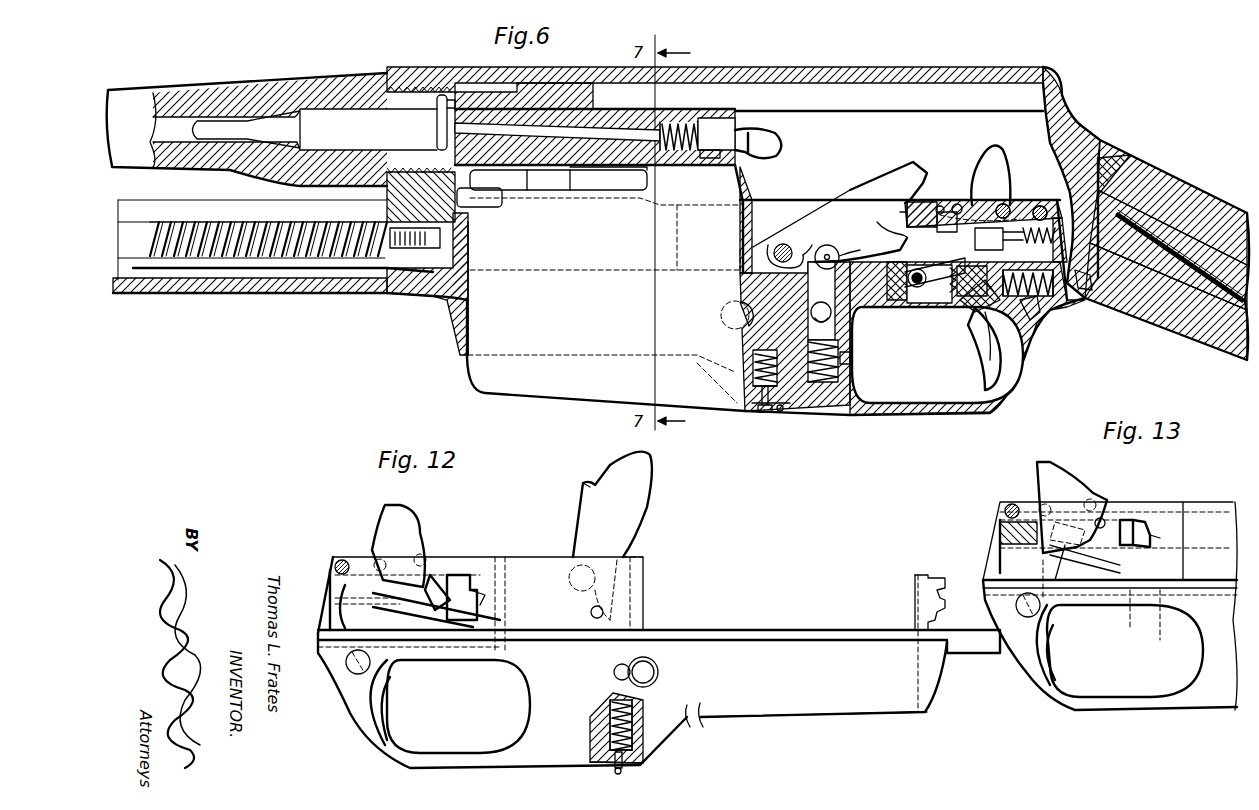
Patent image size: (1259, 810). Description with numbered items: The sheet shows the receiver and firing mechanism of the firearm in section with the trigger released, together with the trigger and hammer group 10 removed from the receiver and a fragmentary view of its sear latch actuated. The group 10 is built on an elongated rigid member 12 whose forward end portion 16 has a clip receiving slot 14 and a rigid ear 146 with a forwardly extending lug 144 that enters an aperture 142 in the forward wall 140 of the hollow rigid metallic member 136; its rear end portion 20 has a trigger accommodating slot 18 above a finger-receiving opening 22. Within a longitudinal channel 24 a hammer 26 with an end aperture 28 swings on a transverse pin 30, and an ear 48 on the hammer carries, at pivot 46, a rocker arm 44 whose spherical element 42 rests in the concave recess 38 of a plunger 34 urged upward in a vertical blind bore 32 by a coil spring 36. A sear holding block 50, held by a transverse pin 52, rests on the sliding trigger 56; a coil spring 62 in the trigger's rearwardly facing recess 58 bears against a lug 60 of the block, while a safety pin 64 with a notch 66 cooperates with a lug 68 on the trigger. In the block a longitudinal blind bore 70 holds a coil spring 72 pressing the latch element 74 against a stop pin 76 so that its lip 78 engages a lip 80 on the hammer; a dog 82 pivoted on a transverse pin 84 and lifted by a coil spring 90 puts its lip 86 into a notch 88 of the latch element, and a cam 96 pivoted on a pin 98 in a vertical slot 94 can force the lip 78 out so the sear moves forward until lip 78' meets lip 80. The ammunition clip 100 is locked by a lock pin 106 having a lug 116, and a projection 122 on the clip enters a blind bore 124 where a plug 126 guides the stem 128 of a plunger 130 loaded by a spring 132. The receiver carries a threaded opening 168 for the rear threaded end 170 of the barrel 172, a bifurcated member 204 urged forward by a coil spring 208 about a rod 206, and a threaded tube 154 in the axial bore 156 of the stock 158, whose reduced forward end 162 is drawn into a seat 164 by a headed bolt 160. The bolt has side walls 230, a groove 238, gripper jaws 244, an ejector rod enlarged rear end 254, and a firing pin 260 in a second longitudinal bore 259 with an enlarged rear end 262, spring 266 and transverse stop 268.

In FIG. 12, the trigger and hammer group 10 is at (684, 621).
In FIG. 12, the elongated rigid member 12 is at (702, 720).
In FIG. 13, the elongated rigid member 12 is at (1223, 705).
In FIG. 6, the clip receiving slot 14 is at (466, 320).
In FIG. 6, the forward end portion 16 is at (425, 295).
In FIG. 12, the forward end portion 16 is at (927, 708).
In FIG. 6, the trigger accommodating slot 18 is at (877, 298).
In FIG. 6, the rear end portion 20 is at (1040, 338).
In FIG. 12, the rear end portion 20 is at (353, 705).
In FIG. 13, the rear end portion 20 is at (1038, 693).
In FIG. 6, the finger-receiving opening 22 is at (893, 400).
In FIG. 12, the finger-receiving opening 22 is at (445, 753).
In FIG. 6, the longitudinal channel 24 is at (753, 218).
In FIG. 12, the longitudinal channel 24 is at (527, 570).
In FIG. 13, the longitudinal channel 24 is at (1197, 508).
In FIG. 6, the hammer 26 is at (878, 183).
In FIG. 12, the hammer 26 is at (635, 527).
In FIG. 6, the end aperture 28 is at (784, 245).
In FIG. 6, the transverse pin 30 is at (776, 247).
In FIG. 12, the transverse pin 30 is at (597, 620).
In FIG. 6, the vertical blind bore 32 is at (805, 292).
In FIG. 6, the plunger 34 is at (809, 360).
In FIG. 6, the coil spring 36 is at (845, 358).
In FIG. 6, the concave recess 38 is at (810, 311).
In FIG. 6, the spherical element 42 is at (806, 325).
In FIG. 6, the rocker arm 44 is at (805, 243).
In FIG. 6, the pivot 46 is at (828, 254).
In FIG. 6, the ear 48 is at (853, 242).
In FIG. 6, the sear holding block 50 is at (915, 203).
In FIG. 12, the sear holding block 50 is at (447, 567).
In FIG. 6, the transverse pin 52 is at (1040, 206).
In FIG. 12, the transverse pin 52 is at (347, 562).
In FIG. 13, the transverse pin 52 is at (1006, 510).
In FIG. 6, the trigger 56 is at (924, 300).
In FIG. 6, the rearwardly facing recess 58 is at (980, 312).
In FIG. 6, the lug 60 is at (1086, 284).
In FIG. 6, the coil spring 62 is at (1048, 302).
In FIG. 6, the safety pin 64 is at (1037, 314).
In FIG. 12, the safety pin 64 is at (352, 668).
In FIG. 13, the safety pin 64 is at (1020, 612).
In FIG. 6, the notch 66 is at (997, 352).
In FIG. 6, the lug 68 is at (995, 332).
In FIG. 6, the longitudinal blind bore 70 is at (1006, 204).
In FIG. 6, the coil spring 72 is at (1067, 218).
In FIG. 6, the latch element 74 is at (907, 212).
In FIG. 12, the latch element 74 is at (470, 578).
In FIG. 13, the latch element 74 is at (1140, 538).
In FIG. 6, the stop pin 76 is at (980, 207).
In FIG. 6, the lip 78 is at (903, 224).
In FIG. 12, the lip 78' is at (489, 586).
In FIG. 13, the lip 78' is at (1181, 529).
In FIG. 6, the lip 80 is at (861, 254).
In FIG. 12, the lip 80 is at (596, 484).
In FIG. 6, the dog 82 is at (968, 281).
In FIG. 12, the dog 82 is at (385, 602).
In FIG. 13, the dog 82 is at (1078, 565).
In FIG. 6, the transverse pin 84 is at (910, 292).
In FIG. 13, the lip 86 is at (1050, 558).
In FIG. 6, the notch 88 is at (1021, 241).
In FIG. 13, the notch 88 is at (1067, 524).
In FIG. 6, the coil spring 90 is at (930, 300).
In FIG. 6, the vertical slot 94 is at (939, 205).
In FIG. 6, the cam 96 is at (993, 157).
In FIG. 12, the cam 96 is at (410, 527).
In FIG. 13, the cam 96 is at (1060, 467).
In FIG. 6, the pin 98 is at (960, 205).
In FIG. 12, the pin 98 is at (437, 546).
In FIG. 13, the pin 98 is at (1098, 518).
In FIG. 6, the ammunition clip 100 is at (573, 386).
In FIG. 6, the lock pin 106 is at (740, 303).
In FIG. 12, the lock pin 106 is at (658, 670).
In FIG. 12, the lug 116 is at (614, 671).
In FIG. 6, the projection 122 is at (770, 414).
In FIG. 6, the blind bore 124 is at (753, 357).
In FIG. 12, the blind bore 124 is at (596, 733).
In FIG. 6, the plug 126 is at (746, 408).
In FIG. 12, the plug 126 is at (643, 760).
In FIG. 6, the stem 128 is at (762, 414).
In FIG. 12, the stem 128 is at (615, 772).
In FIG. 6, the plunger 130 is at (752, 386).
In FIG. 12, the plunger 130 is at (595, 750).
In FIG. 6, the spring 132 is at (753, 366).
In FIG. 12, the spring 132 is at (602, 715).
In FIG. 6, the hollow rigid metallic member 136 is at (912, 67).
In FIG. 6, the forward wall 140 is at (388, 189).
In FIG. 6, the aperture 142 is at (421, 197).
In FIG. 6, the lug 144 is at (465, 234).
In FIG. 12, the lug 144 is at (947, 592).
In FIG. 6, the ear 146 is at (463, 268).
In FIG. 12, the ear 146 is at (918, 603).
In FIG. 6, the internally threaded tube 154 is at (1142, 229).
In FIG. 6, the axial bore 156 is at (1222, 216).
In FIG. 6, the stock 158 is at (1202, 338).
In FIG. 6, the headed bolt 160 is at (1205, 291).
In FIG. 6, the reduced forward end 162 is at (1122, 170).
In FIG. 6, the seat 164 is at (1105, 168).
In FIG. 6, the threaded opening 168 is at (401, 86).
In FIG. 6, the rear threaded end 170 is at (434, 87).
In FIG. 6, the barrel 172 is at (185, 84).
In FIG. 6, the bifurcated member 204 is at (200, 262).
In FIG. 6, the rod 206 is at (135, 230).
In FIG. 6, the coil spring 208 is at (283, 260).
In FIG. 6, the side walls 230 is at (510, 107).
In FIG. 6, the longitudinal groove 238 is at (1005, 67).
In FIG. 6, the cartridge gripper jaws 244 is at (437, 109).
In FIG. 6, the enlarged rear end 254 is at (778, 150).
In FIG. 6, the second longitudinal bore 259 is at (556, 142).
In FIG. 6, the firing pin 260 is at (516, 131).
In FIG. 6, the enlarged rear end 262 is at (727, 121).
In FIG. 6, the spring 266 is at (698, 121).
In FIG. 6, the transverse stop 268 is at (713, 149).